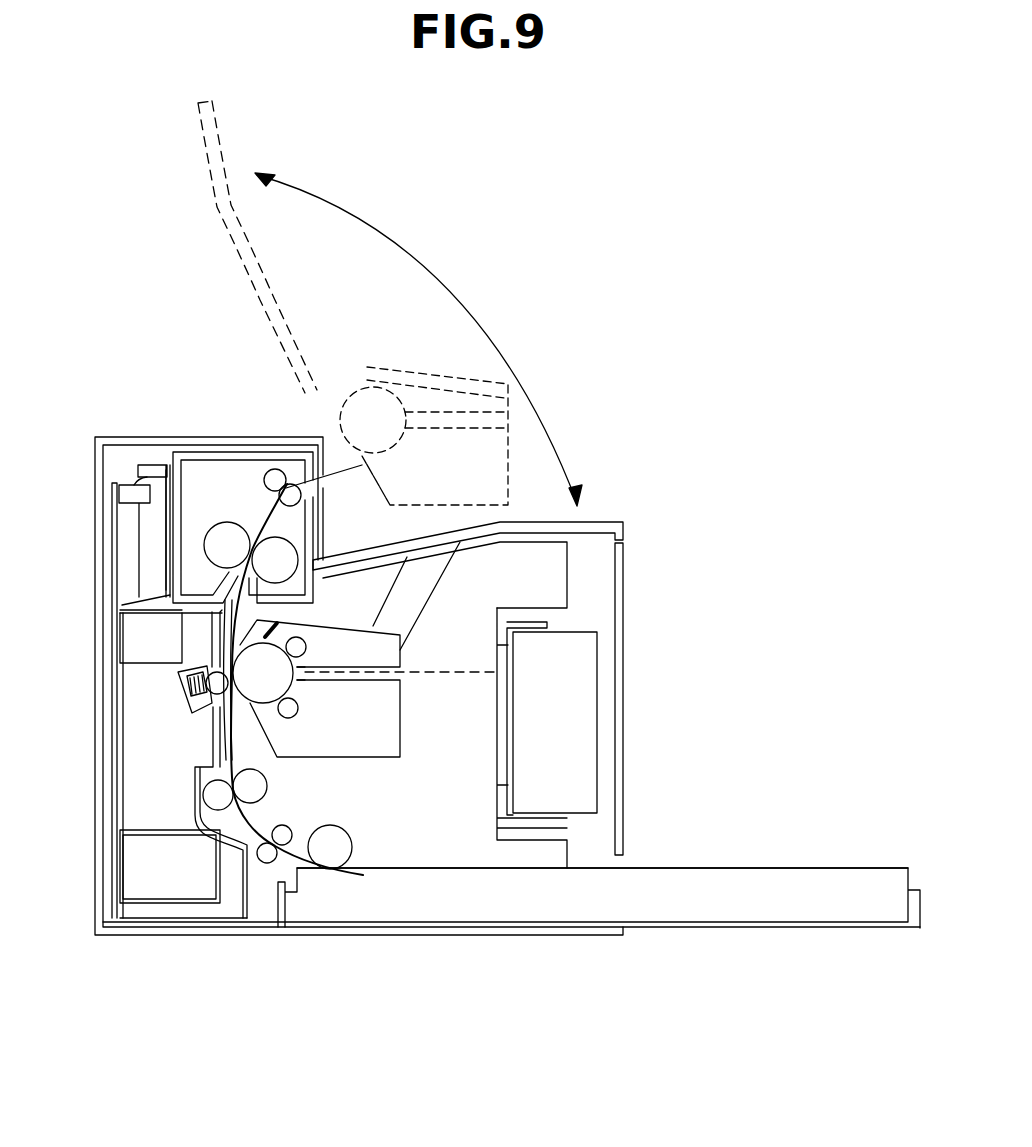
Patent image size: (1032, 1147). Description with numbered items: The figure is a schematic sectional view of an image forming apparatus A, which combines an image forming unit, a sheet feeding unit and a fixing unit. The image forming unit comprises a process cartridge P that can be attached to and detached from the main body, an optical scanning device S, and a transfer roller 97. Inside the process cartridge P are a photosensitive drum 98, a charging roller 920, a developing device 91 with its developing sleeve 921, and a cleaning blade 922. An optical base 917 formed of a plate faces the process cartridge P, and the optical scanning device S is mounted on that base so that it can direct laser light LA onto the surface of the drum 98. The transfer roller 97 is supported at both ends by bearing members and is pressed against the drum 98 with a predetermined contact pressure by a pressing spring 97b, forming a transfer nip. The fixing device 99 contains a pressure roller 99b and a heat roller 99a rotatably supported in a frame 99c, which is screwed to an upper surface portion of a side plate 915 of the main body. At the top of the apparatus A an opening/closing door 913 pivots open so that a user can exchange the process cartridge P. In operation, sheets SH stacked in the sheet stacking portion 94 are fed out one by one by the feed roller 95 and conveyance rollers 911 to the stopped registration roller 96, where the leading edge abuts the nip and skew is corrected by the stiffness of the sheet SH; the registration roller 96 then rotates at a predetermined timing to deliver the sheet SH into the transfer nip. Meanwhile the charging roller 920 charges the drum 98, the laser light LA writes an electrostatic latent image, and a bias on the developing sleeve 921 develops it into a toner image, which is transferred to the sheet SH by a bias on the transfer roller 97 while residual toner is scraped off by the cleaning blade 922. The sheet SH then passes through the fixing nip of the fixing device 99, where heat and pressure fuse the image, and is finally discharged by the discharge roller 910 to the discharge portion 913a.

The image forming apparatus A is at (120, 436).
The process cartridge P is at (426, 368).
The optical scanning device S is at (597, 712).
The sheet SH is at (770, 867).
The laser light LA is at (487, 672).
The developing device 91 is at (367, 760).
The discharge roller 910 is at (277, 480).
The conveyance rollers 911 is at (268, 862).
The opening/closing door 913 is at (222, 208).
The discharge portion 913a is at (440, 533).
The side plate 915 is at (568, 572).
The optical base 917 is at (545, 622).
The charging roller 920 is at (306, 648).
The developing sleeve 921 is at (298, 707).
The cleaning blade 922 is at (279, 628).
The sheet stacking portion 94 is at (705, 929).
The feed roller 95 is at (353, 852).
The registration roller 96 is at (210, 793).
The transfer roller 97 is at (192, 712).
The pressing spring 97b is at (178, 673).
The photosensitive drum 98 is at (237, 650).
The fixing device 99 is at (162, 523).
The heat roller 99a is at (275, 550).
The pressure roller 99b is at (227, 533).
The frame 99c is at (178, 556).